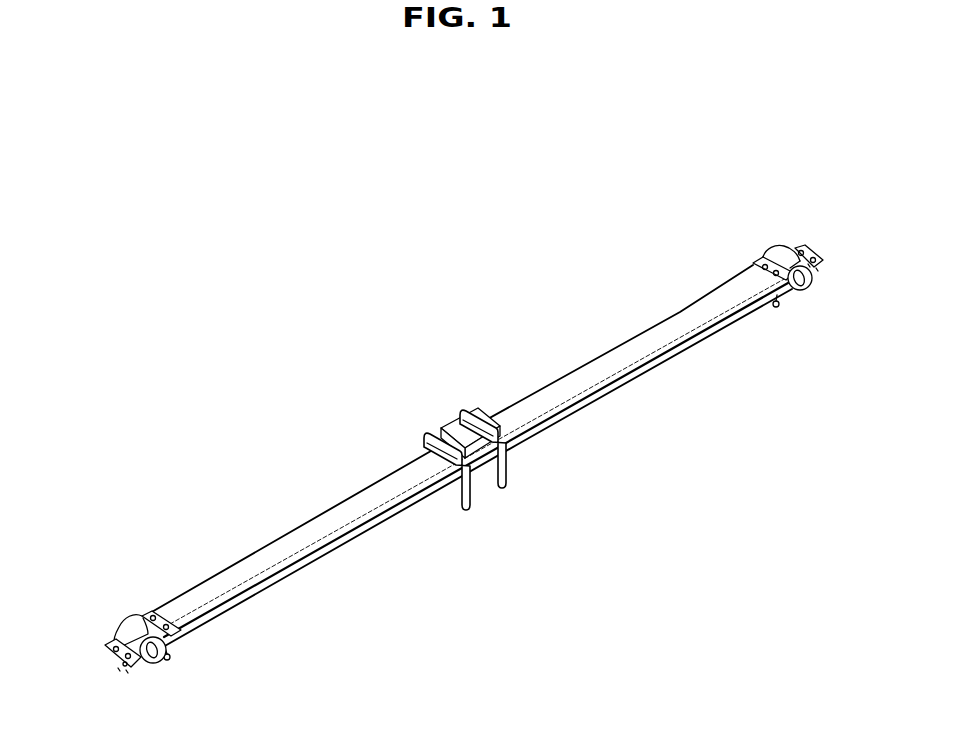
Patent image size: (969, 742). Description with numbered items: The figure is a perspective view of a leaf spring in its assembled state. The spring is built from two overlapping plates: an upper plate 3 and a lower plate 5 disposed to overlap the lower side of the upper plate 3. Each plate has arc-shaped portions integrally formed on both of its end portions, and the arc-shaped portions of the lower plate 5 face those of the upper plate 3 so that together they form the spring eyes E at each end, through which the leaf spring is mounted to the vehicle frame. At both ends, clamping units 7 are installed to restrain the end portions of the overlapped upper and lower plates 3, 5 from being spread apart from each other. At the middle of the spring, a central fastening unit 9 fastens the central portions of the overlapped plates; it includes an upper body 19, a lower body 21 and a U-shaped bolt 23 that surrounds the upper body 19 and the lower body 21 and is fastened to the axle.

The upper plate 3 is at (318, 530).
The lower plate 5 is at (338, 550).
The clamping unit 7 is at (119, 618).
The central fastening unit 9 is at (468, 455).
The upper body 19 is at (452, 428).
The lower body 21 is at (489, 485).
The U-shaped bolt 23 is at (509, 472).
The spring eye E is at (160, 662).